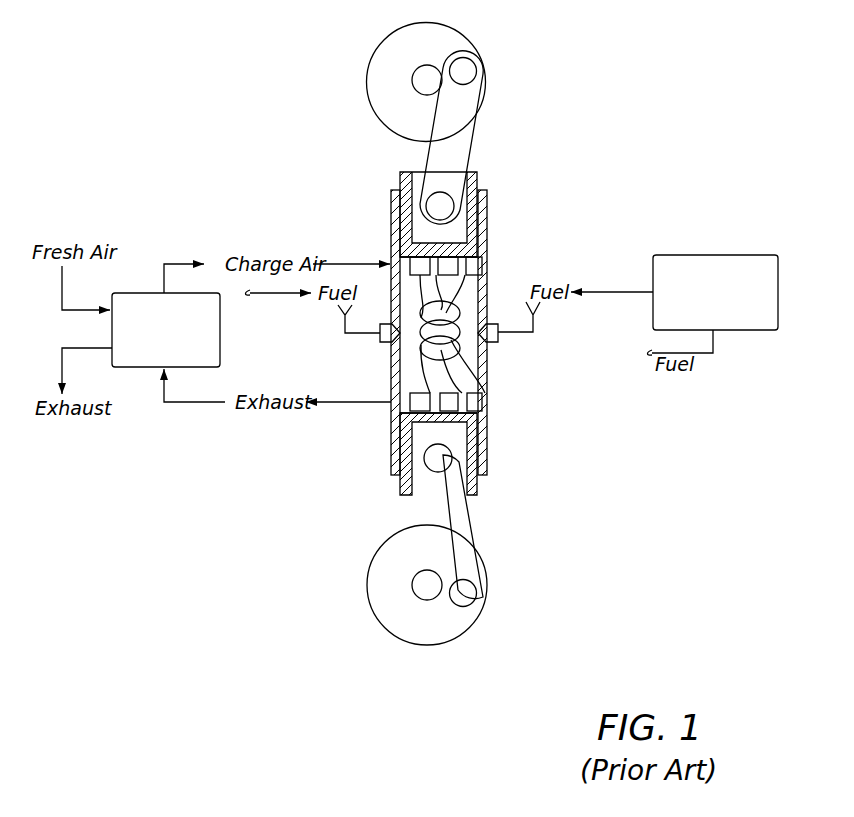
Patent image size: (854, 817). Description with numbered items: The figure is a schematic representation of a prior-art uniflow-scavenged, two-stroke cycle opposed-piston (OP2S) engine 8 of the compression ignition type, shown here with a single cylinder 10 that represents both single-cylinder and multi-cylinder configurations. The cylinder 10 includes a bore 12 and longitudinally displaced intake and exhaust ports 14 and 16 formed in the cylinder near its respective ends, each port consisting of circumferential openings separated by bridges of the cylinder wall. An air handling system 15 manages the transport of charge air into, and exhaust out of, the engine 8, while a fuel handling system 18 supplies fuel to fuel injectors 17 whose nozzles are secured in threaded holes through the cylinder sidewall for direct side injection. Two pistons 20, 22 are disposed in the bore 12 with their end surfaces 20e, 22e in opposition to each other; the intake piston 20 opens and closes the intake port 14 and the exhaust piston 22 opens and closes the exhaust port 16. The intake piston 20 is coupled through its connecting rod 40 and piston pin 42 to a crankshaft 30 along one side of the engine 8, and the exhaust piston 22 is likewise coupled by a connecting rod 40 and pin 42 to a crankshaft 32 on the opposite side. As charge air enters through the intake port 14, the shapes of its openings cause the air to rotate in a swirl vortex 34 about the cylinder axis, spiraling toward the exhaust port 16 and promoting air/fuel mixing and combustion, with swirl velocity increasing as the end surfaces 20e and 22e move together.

The opposed-piston engine 8 is at (256, 135).
The cylinder 10 is at (391, 462).
The bore 12 is at (410, 367).
The intake port 14 is at (490, 268).
The air handling system 15 is at (135, 368).
The exhaust port 16 is at (487, 400).
The fuel injectors 17 is at (390, 324).
The fuel handling system 18 is at (720, 255).
The intake piston 20 is at (403, 205).
The end surface of intake piston 20e is at (413, 266).
The exhaust piston 22 is at (430, 451).
The end surface of exhaust piston 22e is at (400, 408).
The crankshaft 30 is at (372, 56).
The crankshaft 32 is at (385, 632).
The swirl vortex 34 is at (470, 313).
The connecting rod 40 is at (477, 136).
The piston pin 42 is at (441, 205).